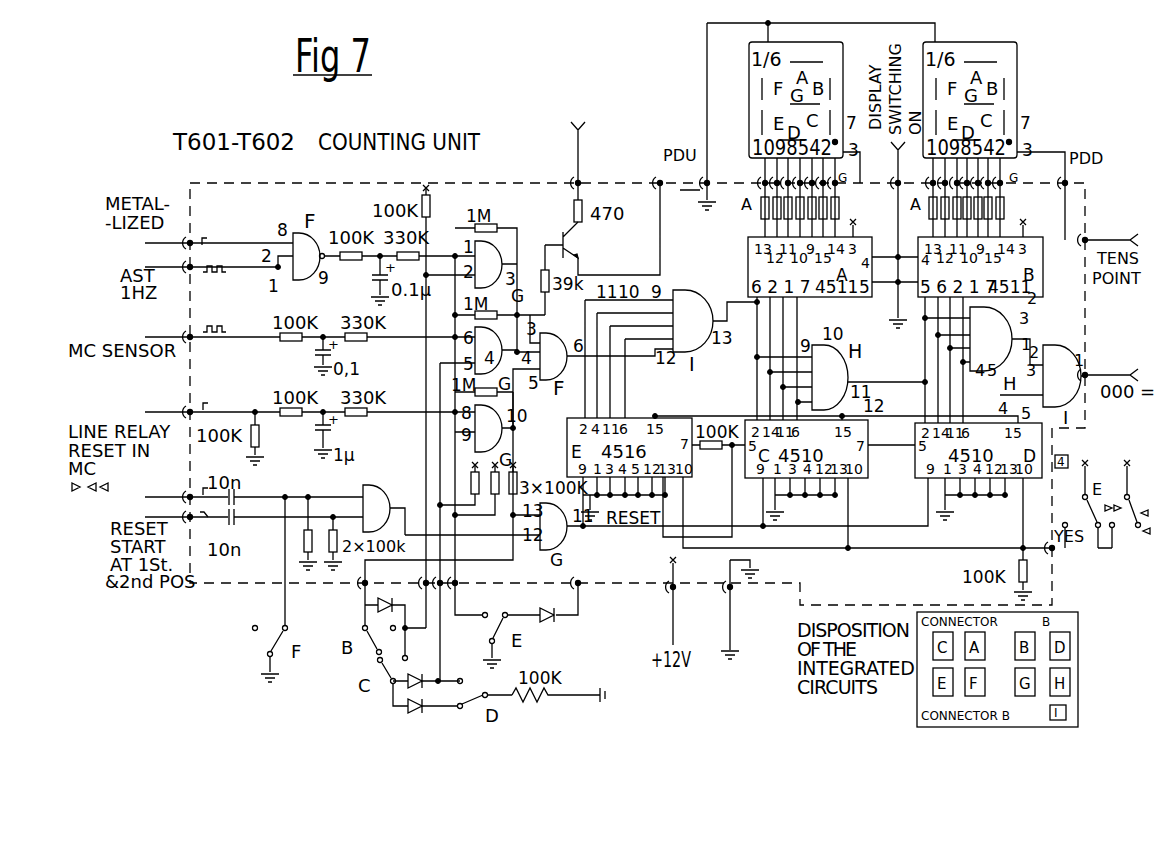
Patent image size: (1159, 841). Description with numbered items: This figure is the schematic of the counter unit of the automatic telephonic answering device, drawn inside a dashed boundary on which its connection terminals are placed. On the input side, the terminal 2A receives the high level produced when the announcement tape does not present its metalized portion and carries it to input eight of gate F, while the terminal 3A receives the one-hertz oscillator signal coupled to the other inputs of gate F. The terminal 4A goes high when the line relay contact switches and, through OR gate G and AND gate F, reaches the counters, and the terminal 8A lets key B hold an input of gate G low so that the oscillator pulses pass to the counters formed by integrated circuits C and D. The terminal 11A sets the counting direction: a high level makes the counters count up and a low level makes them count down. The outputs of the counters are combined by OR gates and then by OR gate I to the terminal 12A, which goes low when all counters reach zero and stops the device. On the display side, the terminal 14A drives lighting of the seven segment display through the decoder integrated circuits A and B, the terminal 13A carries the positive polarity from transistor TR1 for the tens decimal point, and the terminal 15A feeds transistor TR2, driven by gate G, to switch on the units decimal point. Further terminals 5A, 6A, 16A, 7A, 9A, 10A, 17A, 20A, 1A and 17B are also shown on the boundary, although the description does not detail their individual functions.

The terminal 2A is at (219, 236).
The terminal 3A is at (219, 274).
The MC sensor input terminal 5A is at (212, 329).
The terminal 4A is at (212, 404).
The reset start input terminal 6A is at (186, 488).
The reset start second position terminal 16A is at (183, 511).
The terminal 7A is at (352, 601).
The terminal 8A is at (410, 596).
The terminal 9A is at (437, 629).
The terminal 10A is at (468, 596).
The terminal 17A is at (593, 593).
The +12V supply terminal 20A is at (656, 601).
The ground terminal 1A is at (740, 609).
The terminal 11A is at (1067, 558).
The terminal 12A is at (1108, 367).
The terminal 13A is at (1102, 233).
The terminal 14A is at (887, 235).
The terminal 15A is at (595, 155).
The display unit terminal 17B is at (696, 116).